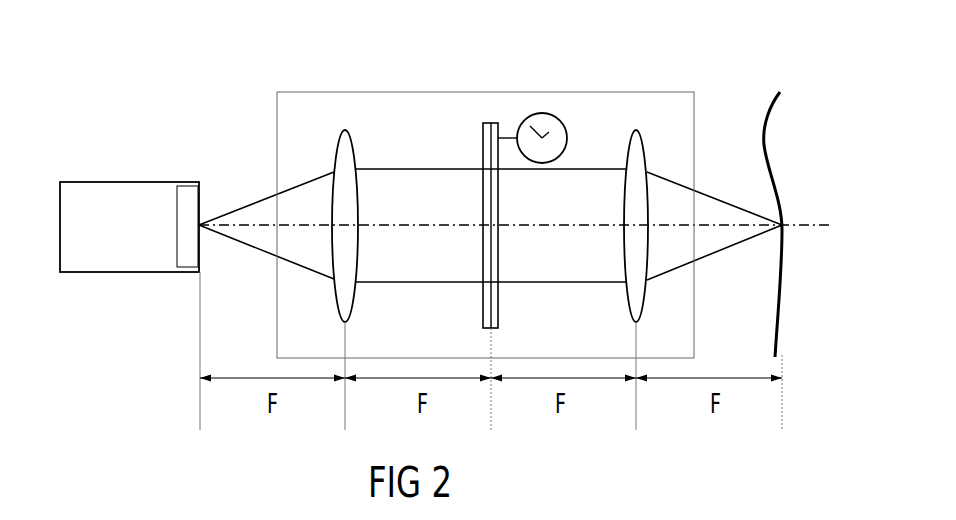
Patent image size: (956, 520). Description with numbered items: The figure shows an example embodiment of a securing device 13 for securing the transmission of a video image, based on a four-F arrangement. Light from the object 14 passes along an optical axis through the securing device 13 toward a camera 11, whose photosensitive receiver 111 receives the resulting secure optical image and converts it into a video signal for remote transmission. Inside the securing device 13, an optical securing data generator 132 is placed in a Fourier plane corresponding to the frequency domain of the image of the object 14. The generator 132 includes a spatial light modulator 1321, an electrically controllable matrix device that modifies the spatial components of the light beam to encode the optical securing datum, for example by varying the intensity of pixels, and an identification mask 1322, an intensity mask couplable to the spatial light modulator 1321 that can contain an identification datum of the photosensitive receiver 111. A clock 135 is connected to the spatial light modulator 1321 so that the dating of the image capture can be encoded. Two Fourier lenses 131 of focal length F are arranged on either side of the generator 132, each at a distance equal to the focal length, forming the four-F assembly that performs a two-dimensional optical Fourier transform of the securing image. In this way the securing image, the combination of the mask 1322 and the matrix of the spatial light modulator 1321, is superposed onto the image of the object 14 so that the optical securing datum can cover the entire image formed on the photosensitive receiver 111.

The camera 11 is at (129, 227).
The photosensitive receiver 111 is at (186, 182).
The securing device 13 is at (277, 117).
The optical lens 131 is at (356, 143).
The optical securing data generator 132 is at (490, 122).
The spatial light modulator 1321 is at (483, 312).
The identification mask 1322 is at (498, 308).
The clock 135 is at (565, 117).
The object 14 is at (765, 143).